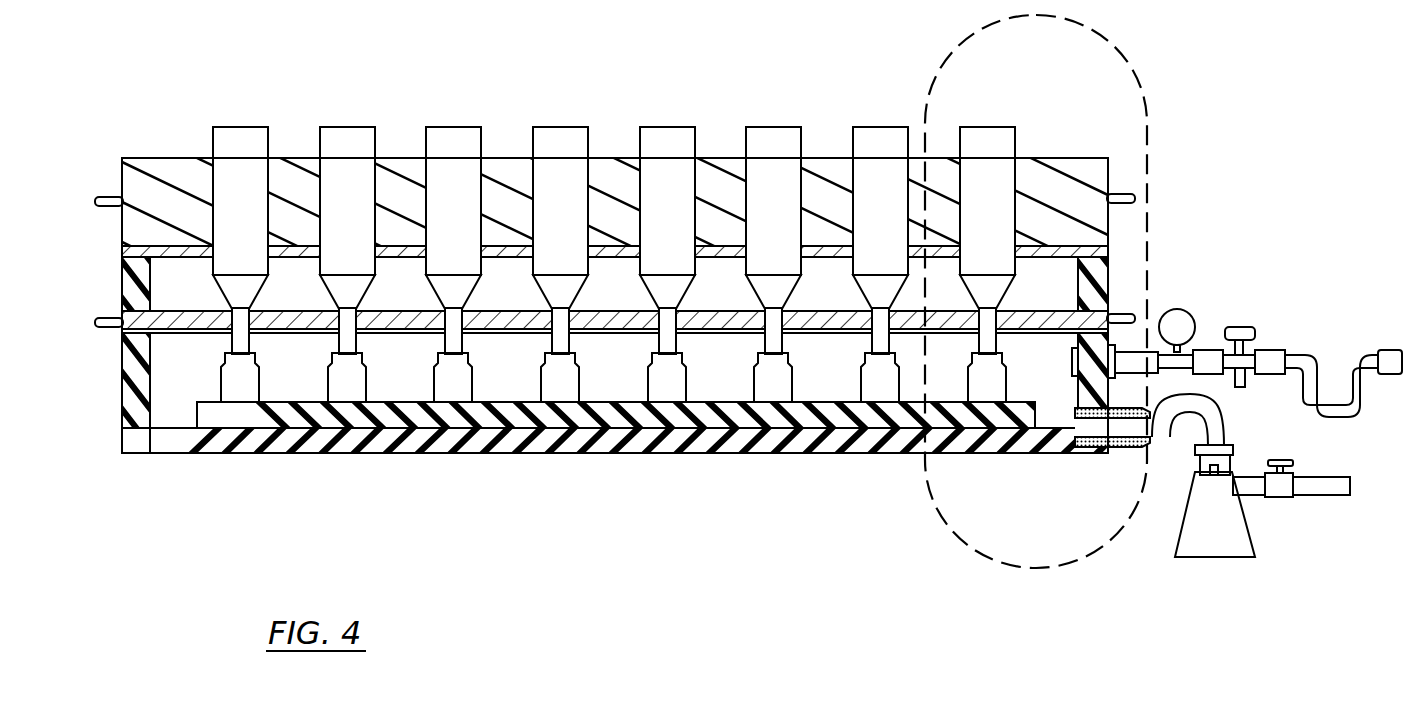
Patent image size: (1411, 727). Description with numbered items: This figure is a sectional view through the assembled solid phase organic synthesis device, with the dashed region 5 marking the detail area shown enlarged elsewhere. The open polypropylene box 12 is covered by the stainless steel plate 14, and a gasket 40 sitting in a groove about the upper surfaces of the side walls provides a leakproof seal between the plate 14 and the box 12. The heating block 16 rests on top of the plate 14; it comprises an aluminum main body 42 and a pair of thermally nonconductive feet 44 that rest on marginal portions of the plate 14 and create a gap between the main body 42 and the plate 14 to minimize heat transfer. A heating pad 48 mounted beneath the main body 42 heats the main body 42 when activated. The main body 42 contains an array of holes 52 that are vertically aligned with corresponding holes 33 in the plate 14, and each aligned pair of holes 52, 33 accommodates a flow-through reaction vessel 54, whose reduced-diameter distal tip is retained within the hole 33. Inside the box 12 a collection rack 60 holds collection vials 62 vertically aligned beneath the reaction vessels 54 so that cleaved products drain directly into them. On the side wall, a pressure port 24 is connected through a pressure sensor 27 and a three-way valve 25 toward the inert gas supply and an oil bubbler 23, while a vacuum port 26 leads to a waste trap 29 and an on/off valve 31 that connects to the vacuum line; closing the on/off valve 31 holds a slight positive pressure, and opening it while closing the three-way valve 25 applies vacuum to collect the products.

The detail region shown in FIG. 5 is at (926, 525).
The open polypropylene box 12 is at (129, 408).
The stainless steel plate 14 is at (512, 334).
The heating block 16 is at (110, 174).
The oil bubbler 23 is at (1333, 418).
The pressure port 24 is at (1074, 362).
The three-way valve 25 is at (1245, 326).
The vacuum port 26 is at (1072, 443).
The pressure sensor 27 is at (1180, 308).
The waste trap 29 is at (1248, 530).
The on/off valve 31 is at (1292, 457).
The holes 33 is at (233, 337).
The gasket 40 is at (123, 352).
The main body 42 is at (828, 170).
The feet 44 is at (131, 281).
The heating pad 48 is at (1033, 257).
The holes 52 is at (178, 242).
The flow-through reaction vessel 54 is at (566, 127).
The collection rack 60 is at (397, 420).
The collection vials 62 is at (458, 390).